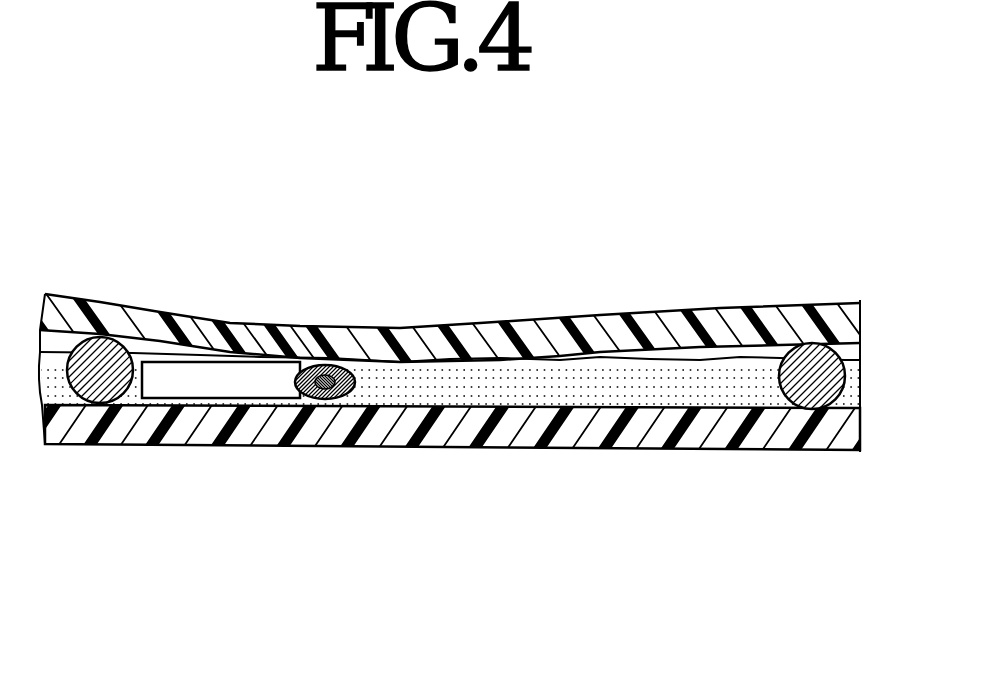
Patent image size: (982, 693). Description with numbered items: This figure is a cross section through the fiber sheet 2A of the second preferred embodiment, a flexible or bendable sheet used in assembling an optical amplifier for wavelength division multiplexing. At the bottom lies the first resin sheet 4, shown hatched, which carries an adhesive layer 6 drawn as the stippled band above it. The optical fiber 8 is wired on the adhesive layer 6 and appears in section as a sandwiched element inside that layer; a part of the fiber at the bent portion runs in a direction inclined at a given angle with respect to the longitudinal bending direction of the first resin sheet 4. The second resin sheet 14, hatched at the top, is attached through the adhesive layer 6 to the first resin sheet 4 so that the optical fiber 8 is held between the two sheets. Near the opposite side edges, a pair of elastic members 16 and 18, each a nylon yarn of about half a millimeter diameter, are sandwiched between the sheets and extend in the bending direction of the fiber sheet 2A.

The fiber sheet 2A is at (565, 292).
The first resin sheet 4 is at (605, 447).
The adhesive layer 6 is at (468, 388).
The optical fiber 8 is at (215, 390).
The second resin sheet 14 is at (287, 336).
The elastic member 16 is at (95, 338).
The elastic member 18 is at (813, 343).